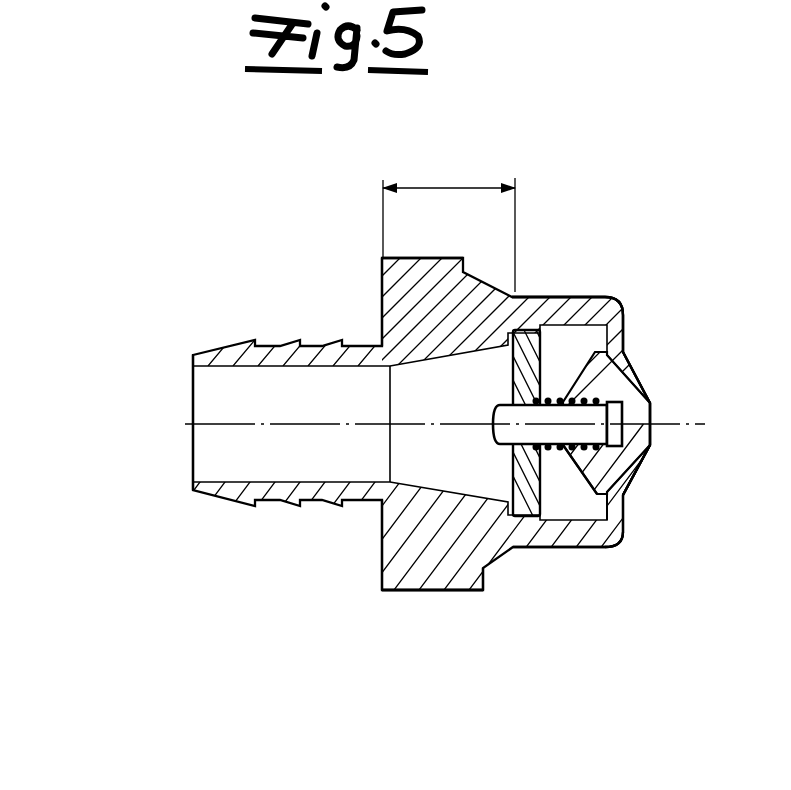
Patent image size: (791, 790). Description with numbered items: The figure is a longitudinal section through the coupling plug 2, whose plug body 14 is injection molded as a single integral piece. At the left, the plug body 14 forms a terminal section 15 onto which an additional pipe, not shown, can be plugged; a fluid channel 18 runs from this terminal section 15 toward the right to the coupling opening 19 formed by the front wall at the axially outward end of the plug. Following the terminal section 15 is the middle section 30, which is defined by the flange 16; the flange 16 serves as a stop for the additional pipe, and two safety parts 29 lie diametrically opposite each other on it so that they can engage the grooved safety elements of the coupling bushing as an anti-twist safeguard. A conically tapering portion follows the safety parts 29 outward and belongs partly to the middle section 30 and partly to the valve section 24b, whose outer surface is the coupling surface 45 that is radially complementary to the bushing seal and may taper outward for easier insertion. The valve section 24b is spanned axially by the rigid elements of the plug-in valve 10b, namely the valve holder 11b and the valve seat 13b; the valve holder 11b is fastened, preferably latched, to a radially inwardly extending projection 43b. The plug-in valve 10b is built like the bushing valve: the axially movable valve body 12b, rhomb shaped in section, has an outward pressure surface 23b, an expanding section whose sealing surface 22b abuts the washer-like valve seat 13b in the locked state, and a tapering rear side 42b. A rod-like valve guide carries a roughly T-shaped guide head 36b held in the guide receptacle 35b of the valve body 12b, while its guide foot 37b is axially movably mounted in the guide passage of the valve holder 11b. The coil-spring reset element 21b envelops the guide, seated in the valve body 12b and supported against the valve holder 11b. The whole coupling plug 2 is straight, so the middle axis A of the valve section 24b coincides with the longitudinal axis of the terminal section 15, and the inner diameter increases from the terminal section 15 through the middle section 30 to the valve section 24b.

The coupling plug 2 is at (282, 658).
The plug body 14 is at (375, 605).
The terminal section 15 is at (215, 318).
The flange 16 is at (382, 292).
The fluid channel 18 is at (462, 403).
The safety part 29 is at (415, 268).
The middle section 30 is at (445, 188).
The guide foot 37b is at (383, 538).
The coupling surface 45 is at (573, 297).
The valve section 24b is at (603, 282).
The reset element 21b is at (622, 318).
The valve body 12b is at (630, 350).
The pressure surface 23b is at (700, 370).
The guide head 36b is at (637, 463).
The sealing surface 22b is at (648, 472).
The valve seat 13b is at (627, 500).
The coupling opening 19 is at (620, 537).
The valve holder 11b is at (537, 345).
The plug-in valve 10b is at (565, 496).
The rear side 42b is at (580, 496).
The guide receptacle 35b is at (598, 492).
The radially inwardly extending projection 43b is at (505, 517).
The middle axis A is at (705, 424).